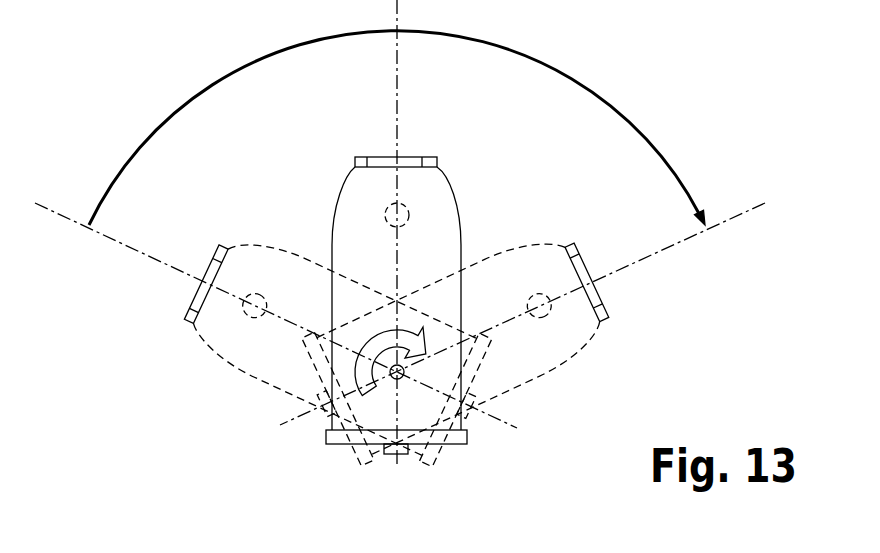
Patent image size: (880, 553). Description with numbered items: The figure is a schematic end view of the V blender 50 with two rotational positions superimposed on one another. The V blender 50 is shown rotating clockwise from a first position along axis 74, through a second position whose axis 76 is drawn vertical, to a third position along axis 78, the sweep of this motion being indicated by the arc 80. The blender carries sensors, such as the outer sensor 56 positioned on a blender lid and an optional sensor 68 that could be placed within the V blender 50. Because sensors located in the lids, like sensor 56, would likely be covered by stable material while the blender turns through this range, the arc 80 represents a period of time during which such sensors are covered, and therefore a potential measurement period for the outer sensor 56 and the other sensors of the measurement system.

The V blender 50 is at (563, 203).
The outer sensor 56 is at (405, 456).
The optional sensor 68 is at (397, 228).
The axis 74 is at (170, 265).
The axis 76 is at (396, 110).
The axis 78 is at (733, 213).
The arc 80 is at (607, 99).